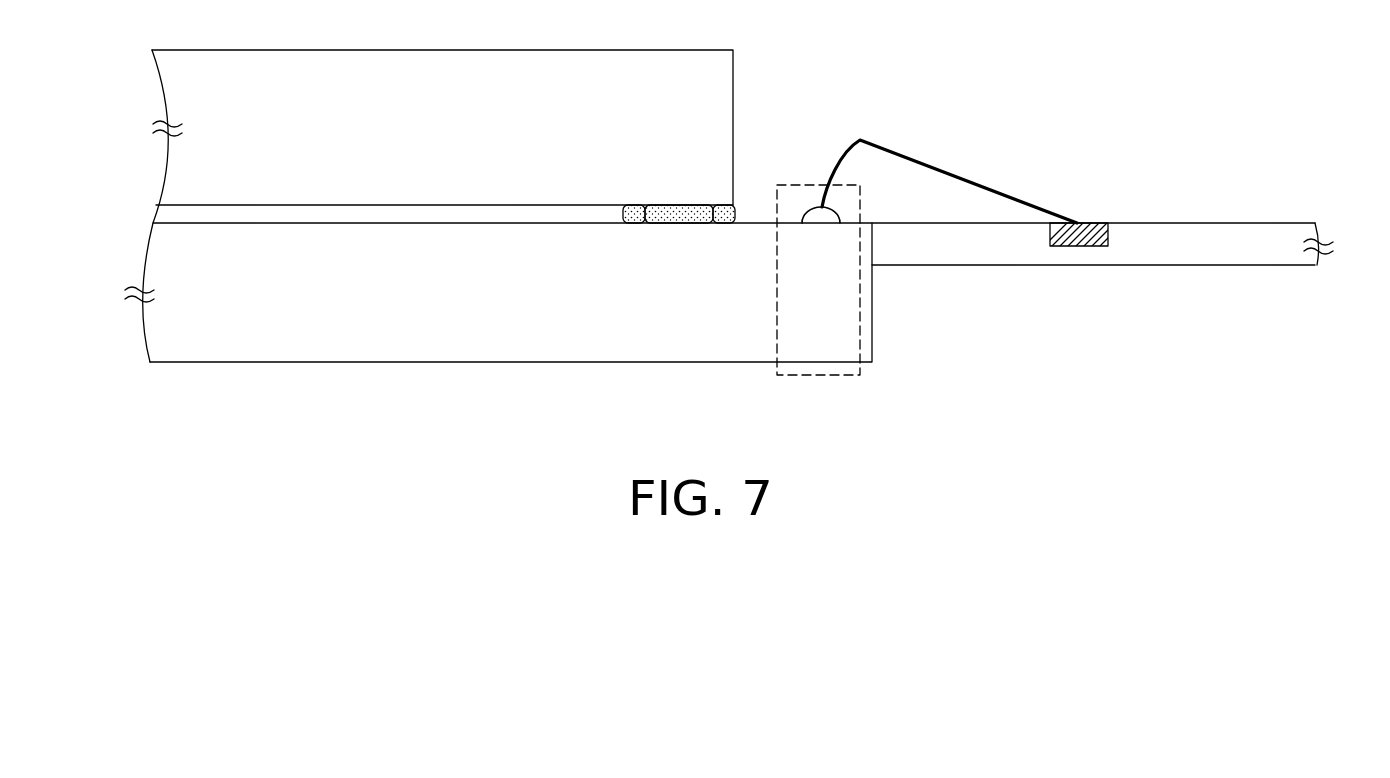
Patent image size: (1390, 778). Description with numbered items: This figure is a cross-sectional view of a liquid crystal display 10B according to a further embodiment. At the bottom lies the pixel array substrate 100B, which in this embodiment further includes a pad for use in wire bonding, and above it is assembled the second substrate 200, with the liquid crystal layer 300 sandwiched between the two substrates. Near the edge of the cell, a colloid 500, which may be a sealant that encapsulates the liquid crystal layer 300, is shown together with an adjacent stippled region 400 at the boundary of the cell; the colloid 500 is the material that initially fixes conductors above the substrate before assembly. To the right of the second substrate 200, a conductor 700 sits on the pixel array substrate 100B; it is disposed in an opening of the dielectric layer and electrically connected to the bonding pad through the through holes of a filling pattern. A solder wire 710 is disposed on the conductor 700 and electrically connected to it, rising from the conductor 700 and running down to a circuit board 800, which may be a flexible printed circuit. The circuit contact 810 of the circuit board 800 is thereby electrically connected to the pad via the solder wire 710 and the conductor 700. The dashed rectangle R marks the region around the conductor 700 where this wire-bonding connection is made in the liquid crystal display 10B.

The second substrate 200 is at (172, 82).
The liquid crystal layer 300 is at (172, 214).
The pixel array substrate 100B is at (169, 338).
The adhesive / sealing member 400 is at (672, 223).
The colloid 500 is at (727, 223).
The conductor 700 is at (812, 217).
The solder wire 710 is at (843, 145).
The circuit board 800 is at (1225, 235).
The circuit contact 810 is at (1082, 246).
The region R is at (830, 376).
The liquid crystal display 10B is at (1369, 418).